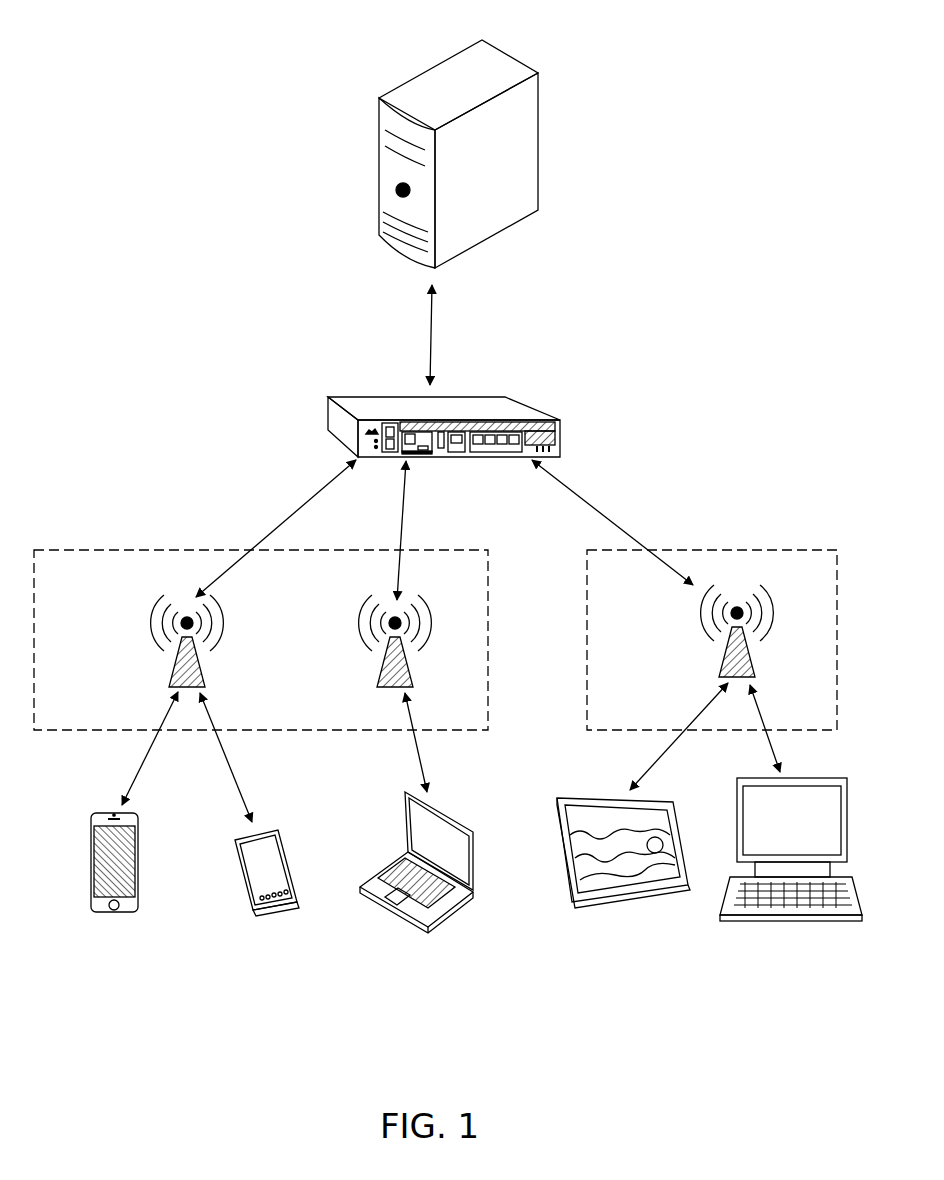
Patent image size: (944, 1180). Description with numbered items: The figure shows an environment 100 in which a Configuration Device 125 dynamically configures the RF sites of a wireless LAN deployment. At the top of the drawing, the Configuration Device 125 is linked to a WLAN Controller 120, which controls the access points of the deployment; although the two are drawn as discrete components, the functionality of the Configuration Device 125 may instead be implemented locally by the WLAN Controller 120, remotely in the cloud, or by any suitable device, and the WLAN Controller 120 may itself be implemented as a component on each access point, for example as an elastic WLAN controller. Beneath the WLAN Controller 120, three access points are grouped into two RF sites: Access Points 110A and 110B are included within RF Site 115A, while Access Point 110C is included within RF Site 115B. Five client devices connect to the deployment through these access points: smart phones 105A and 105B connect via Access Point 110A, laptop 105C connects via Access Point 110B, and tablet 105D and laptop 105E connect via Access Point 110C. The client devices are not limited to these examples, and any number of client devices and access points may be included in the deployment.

The environment 100 is at (203, 56).
The Configuration Device 125 is at (379, 160).
The WLAN Controller 120 is at (328, 412).
The RF Site 115A is at (152, 548).
The RF Site 115B is at (731, 548).
The Access Point 110A is at (170, 672).
The Access Point 110B is at (380, 672).
The Access Point 110C is at (722, 662).
The smart phone 105A is at (114, 912).
The smart phone 105B is at (270, 912).
The laptop 105C is at (415, 920).
The tablet 105D is at (613, 900).
The laptop 105E is at (790, 922).